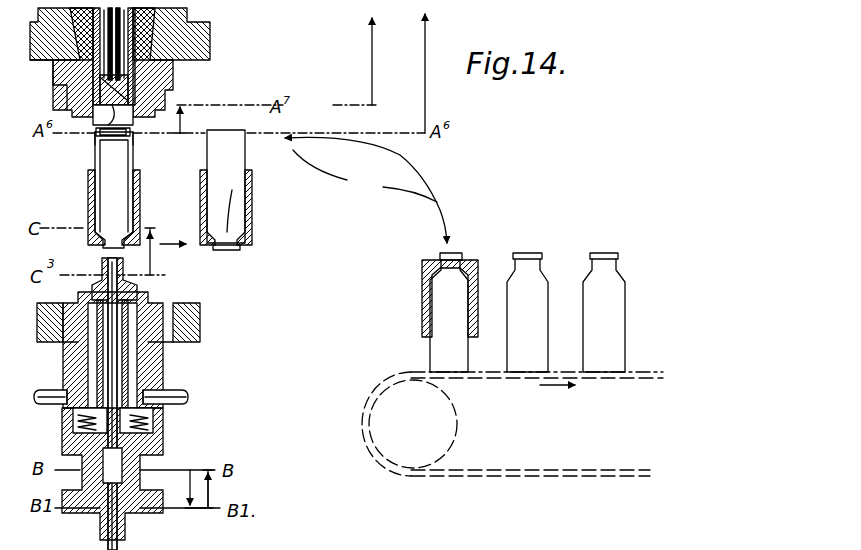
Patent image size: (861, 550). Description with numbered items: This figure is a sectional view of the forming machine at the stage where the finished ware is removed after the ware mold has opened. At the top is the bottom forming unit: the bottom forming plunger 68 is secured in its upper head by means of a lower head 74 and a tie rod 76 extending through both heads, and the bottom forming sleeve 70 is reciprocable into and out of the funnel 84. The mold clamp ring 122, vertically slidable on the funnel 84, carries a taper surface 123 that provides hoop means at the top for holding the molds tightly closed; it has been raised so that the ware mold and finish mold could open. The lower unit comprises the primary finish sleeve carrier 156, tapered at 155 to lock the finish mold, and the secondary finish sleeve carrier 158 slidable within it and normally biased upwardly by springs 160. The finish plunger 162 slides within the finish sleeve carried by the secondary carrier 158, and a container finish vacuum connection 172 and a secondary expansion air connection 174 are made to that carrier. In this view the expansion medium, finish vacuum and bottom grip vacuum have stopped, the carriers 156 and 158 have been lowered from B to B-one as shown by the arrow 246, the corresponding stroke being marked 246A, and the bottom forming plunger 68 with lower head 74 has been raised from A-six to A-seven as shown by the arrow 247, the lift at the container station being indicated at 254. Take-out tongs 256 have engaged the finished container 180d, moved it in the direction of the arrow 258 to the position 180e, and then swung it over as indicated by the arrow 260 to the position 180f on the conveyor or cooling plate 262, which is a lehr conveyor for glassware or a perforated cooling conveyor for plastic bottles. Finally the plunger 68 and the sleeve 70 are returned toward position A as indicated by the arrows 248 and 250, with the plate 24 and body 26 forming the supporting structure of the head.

The support plate 24 is at (200, 311).
The filling head body 26 is at (205, 32).
The bottom forming plunger 68 is at (138, 17).
The bottom forming sleeve 70 is at (160, 58).
The lower head 74 is at (132, 135).
The tie rod 76 is at (108, 54).
The funnel 84 is at (145, 35).
The mold clamp ring 122 is at (170, 95).
The taper surface 123 is at (180, 100).
The taper 155 is at (75, 315).
The primary finish sleeve carrier 156 is at (163, 445).
The secondary finish sleeve carrier 158 is at (163, 368).
The springs 160 is at (73, 428).
The finish plunger 162 is at (110, 367).
The container finish vacuum connection 172 is at (58, 393).
The secondary expansion air connection 174 is at (178, 385).
The finished container 180d is at (100, 163).
The container position 180e is at (207, 150).
The container position on conveyor 180f is at (445, 322).
The arrow 246 is at (190, 472).
The plunger stroke dimension 246A is at (210, 500).
The arrow 247 is at (186, 124).
The arrow 248 is at (427, 50).
The arrow 250 is at (371, 56).
The container lift distance 254 is at (150, 262).
The take-out tongs 256 is at (88, 197).
The arrow 258 is at (180, 230).
The arrow 260 is at (366, 190).
The conveyor or cooling plate 262 is at (386, 379).